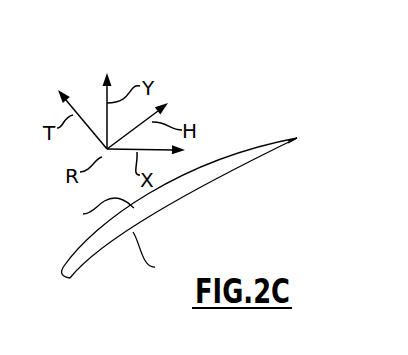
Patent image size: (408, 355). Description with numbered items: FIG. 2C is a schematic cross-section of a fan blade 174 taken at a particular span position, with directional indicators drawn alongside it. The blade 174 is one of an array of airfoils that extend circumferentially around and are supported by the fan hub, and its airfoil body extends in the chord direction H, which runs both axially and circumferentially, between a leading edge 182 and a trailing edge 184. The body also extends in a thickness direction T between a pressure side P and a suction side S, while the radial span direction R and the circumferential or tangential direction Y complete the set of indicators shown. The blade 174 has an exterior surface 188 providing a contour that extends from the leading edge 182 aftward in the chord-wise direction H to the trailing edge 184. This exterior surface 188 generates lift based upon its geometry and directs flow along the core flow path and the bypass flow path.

The fan blade 174 is at (182, 202).
The leading edge 182 is at (62, 275).
The trailing edge 184 is at (297, 138).
The exterior surface 188 is at (165, 213).